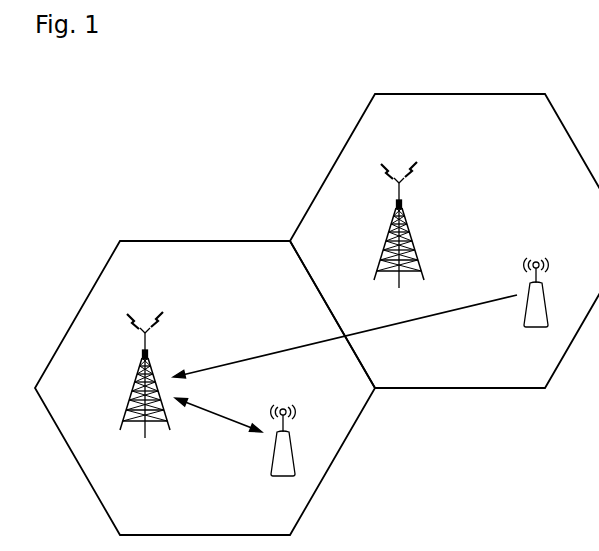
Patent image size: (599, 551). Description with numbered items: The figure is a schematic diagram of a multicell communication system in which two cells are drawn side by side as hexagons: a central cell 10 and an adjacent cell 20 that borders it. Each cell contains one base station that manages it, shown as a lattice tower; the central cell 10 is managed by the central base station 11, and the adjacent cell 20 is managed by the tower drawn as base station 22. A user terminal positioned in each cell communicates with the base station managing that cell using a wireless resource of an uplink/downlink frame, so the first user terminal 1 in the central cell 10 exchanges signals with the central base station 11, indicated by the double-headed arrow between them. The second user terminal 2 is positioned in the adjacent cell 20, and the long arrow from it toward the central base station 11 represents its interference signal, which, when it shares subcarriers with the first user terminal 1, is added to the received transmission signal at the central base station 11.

The central cell 10 is at (220, 240).
The adjacent cell 20 is at (492, 93).
The central base station 11 is at (135, 392).
The base station of adjacent cell 22 is at (388, 244).
The first user terminal 1 is at (270, 463).
The second user terminal 2 is at (549, 300).